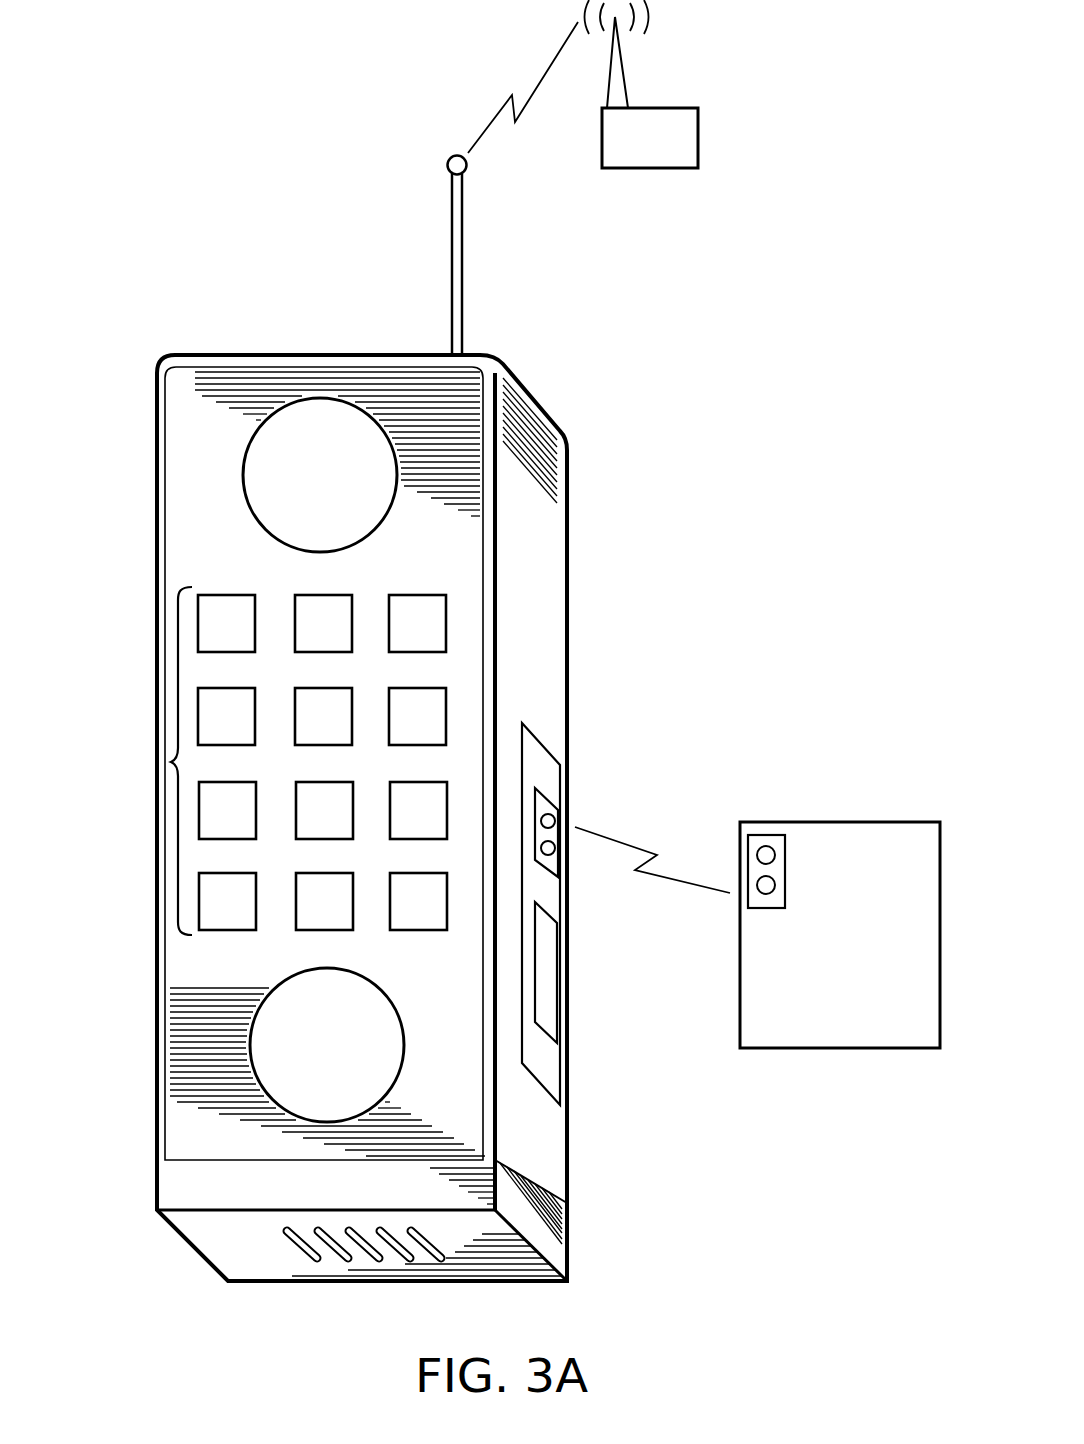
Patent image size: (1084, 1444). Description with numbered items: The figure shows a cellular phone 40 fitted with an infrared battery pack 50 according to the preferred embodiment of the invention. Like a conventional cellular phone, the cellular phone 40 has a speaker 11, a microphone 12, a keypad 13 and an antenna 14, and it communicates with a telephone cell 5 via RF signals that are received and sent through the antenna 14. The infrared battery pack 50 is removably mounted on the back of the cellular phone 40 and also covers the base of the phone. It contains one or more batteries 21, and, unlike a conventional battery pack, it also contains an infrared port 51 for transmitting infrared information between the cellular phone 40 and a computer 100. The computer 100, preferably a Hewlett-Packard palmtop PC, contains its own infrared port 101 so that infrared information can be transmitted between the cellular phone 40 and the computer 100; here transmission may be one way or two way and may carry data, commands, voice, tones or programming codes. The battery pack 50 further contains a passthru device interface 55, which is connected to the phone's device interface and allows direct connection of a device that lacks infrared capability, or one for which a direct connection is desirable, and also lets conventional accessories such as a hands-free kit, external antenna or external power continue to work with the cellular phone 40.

The cellular phone 40 is at (187, 355).
The antenna 14 is at (463, 253).
The telephone cell 5 is at (700, 138).
The speaker 11 is at (252, 458).
The microphone 12 is at (250, 1028).
The keypad 13 is at (173, 762).
The infrared battery pack 50 is at (560, 780).
The infrared port 51 is at (563, 843).
The batteries 21 is at (548, 1007).
The computer 100 is at (858, 822).
The infrared port 101 is at (757, 888).
The passthru device interface 55 is at (298, 1245).